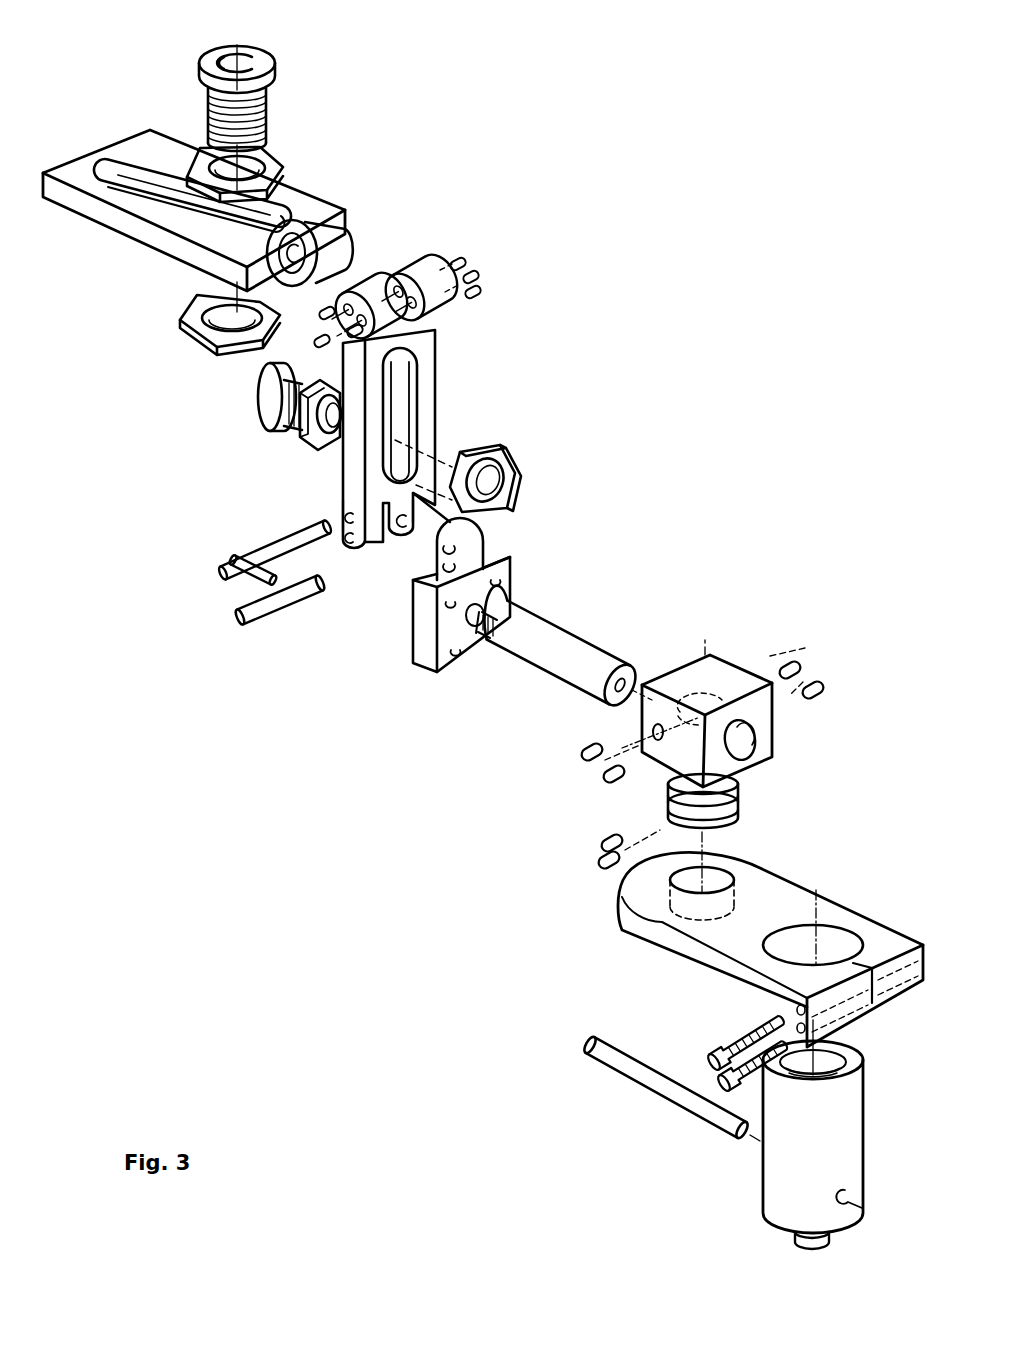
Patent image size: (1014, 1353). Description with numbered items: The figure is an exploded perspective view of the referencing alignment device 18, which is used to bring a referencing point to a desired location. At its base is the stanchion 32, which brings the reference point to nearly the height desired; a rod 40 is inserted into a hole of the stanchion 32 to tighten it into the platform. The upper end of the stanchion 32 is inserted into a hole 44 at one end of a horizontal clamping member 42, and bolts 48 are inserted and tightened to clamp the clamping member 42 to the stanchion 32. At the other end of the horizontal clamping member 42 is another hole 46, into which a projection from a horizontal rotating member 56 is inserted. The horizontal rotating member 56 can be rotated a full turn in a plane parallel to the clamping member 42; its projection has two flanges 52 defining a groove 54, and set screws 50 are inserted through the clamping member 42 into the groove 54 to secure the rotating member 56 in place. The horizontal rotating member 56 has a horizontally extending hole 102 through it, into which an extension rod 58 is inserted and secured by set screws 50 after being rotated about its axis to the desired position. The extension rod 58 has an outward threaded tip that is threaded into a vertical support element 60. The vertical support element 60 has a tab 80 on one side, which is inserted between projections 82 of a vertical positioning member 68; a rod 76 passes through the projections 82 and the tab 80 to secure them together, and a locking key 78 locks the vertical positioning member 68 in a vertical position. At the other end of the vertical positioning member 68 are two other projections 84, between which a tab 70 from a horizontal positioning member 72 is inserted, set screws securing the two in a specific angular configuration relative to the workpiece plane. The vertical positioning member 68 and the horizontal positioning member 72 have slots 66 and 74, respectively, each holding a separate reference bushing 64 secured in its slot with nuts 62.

The referencing alignment device 18 is at (635, 232).
The stanchion 32 is at (850, 1130).
The rod 40 is at (636, 1078).
The horizontal clamping member 42 is at (642, 942).
The hole 44 is at (792, 936).
The hole 46 is at (705, 878).
The bolts 48 is at (718, 1080).
The set screws 50 is at (820, 684).
The flanges 52 is at (738, 812).
The groove 54 is at (668, 805).
The horizontal rotating member 56 is at (706, 655).
The extension rod 58 is at (560, 652).
The vertical support element 60 is at (502, 590).
The nuts 62 is at (255, 150).
The reference bushings 64 is at (265, 54).
The slot 66 is at (398, 416).
The vertical positioning member 68 is at (432, 381).
The tab 70 is at (348, 222).
The horizontal positioning member 72 is at (185, 250).
The slot 74 is at (130, 168).
The rod 76 is at (258, 617).
The locking key 78 is at (225, 568).
The tab 80 is at (483, 538).
The projections 82 is at (413, 500).
The projections 84 is at (433, 318).
The hole 102 is at (755, 752).